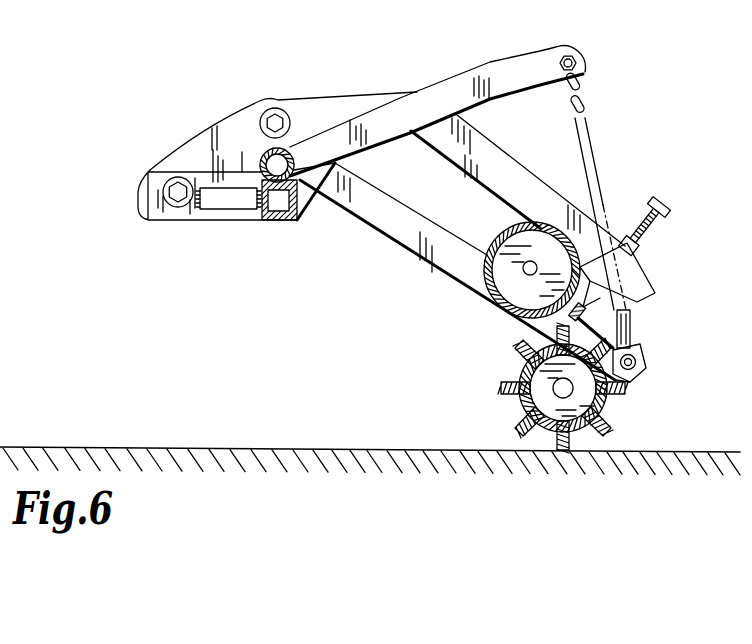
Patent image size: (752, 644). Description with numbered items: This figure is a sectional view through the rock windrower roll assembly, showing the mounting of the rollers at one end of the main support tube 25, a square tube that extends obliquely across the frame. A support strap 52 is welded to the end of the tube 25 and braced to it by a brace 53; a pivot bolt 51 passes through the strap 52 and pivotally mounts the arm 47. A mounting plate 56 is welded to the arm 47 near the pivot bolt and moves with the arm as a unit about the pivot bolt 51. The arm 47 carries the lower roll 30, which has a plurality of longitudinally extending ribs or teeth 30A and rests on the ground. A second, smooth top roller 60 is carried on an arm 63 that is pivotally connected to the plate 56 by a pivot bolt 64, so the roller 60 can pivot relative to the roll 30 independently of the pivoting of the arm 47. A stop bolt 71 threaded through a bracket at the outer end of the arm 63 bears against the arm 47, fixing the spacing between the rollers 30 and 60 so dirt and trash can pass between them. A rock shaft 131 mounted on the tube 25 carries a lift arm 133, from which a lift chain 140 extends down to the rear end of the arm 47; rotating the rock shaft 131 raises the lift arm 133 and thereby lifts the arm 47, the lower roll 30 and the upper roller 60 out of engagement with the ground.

The lift arm 133 is at (492, 78).
The lift chain 140 is at (589, 84).
The mounting plate 56 is at (234, 122).
The pivot bolt 64 is at (277, 121).
The support strap 52 is at (160, 180).
The rock shaft 131 is at (263, 156).
The pivot bolt 51 is at (179, 207).
The brace 53 is at (229, 206).
The main support tube 25 is at (281, 220).
The arm 63 is at (503, 155).
The top roller 60 is at (490, 242).
The stop bolt 71 is at (657, 222).
The arm 47 is at (428, 263).
The lower roll 30 is at (523, 410).
The ribs or teeth 30A is at (517, 364).